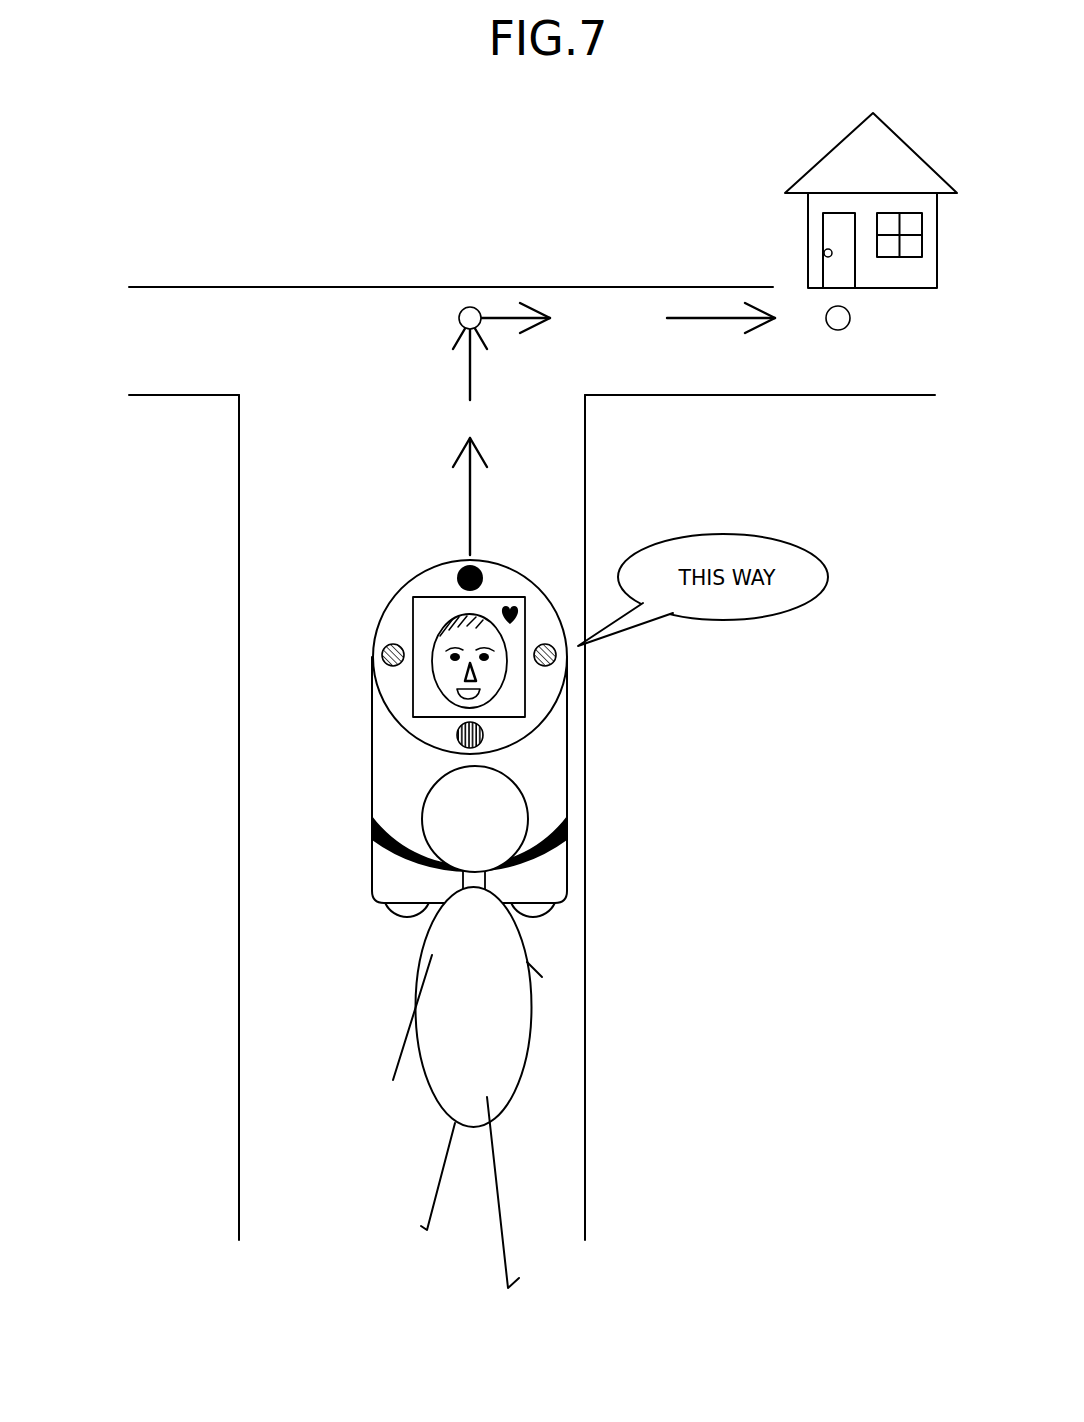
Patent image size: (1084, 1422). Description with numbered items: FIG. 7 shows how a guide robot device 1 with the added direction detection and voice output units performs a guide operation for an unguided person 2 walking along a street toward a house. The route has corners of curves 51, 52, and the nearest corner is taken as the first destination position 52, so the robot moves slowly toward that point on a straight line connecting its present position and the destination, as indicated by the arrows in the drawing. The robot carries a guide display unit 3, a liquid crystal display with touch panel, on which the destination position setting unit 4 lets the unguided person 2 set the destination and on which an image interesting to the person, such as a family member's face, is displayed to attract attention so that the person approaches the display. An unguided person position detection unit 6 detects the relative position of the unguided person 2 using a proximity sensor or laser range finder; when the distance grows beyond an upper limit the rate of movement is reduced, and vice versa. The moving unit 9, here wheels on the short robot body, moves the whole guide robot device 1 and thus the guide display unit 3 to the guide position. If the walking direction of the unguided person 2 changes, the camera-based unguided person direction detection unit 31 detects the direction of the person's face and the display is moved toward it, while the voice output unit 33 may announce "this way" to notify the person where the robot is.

The guide robot device 1 is at (372, 772).
The unguided person 2 is at (412, 1117).
The guide display unit 3 is at (413, 608).
The destination position setting unit 4 is at (457, 734).
The unguided person position detection unit 6 is at (372, 819).
The moving unit 9 is at (387, 932).
The unguided person direction detection unit 31 is at (461, 567).
The voice output unit 33 is at (382, 655).
The corner of curve on set route 51 is at (850, 318).
The first destination position P1 52 is at (470, 307).